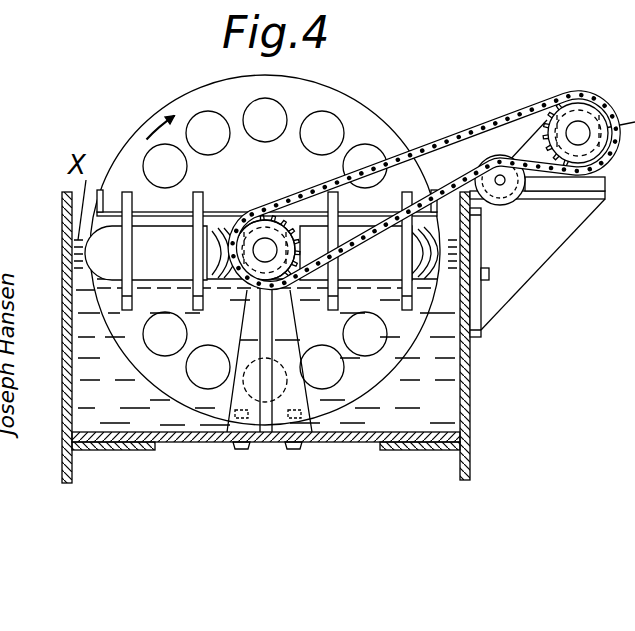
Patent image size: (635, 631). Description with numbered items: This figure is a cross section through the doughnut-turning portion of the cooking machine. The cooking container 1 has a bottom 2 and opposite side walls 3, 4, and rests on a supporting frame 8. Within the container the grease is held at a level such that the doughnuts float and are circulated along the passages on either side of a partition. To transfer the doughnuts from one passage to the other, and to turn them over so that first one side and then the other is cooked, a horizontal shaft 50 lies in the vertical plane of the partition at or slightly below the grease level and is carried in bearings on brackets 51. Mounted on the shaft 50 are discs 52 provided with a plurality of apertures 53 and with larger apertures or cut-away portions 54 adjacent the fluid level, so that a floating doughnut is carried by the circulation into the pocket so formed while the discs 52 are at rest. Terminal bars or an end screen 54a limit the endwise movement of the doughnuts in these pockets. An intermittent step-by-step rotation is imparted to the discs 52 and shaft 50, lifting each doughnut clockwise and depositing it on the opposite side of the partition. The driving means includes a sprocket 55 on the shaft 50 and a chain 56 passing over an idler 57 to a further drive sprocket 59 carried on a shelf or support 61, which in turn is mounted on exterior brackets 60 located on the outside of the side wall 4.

The cooking container 1 is at (267, 341).
The bottom 2 is at (193, 442).
The side wall 3 is at (62, 221).
The side wall 4 is at (481, 336).
The supporting frame 8 is at (72, 472).
The horizontal shaft 50 is at (262, 240).
The brackets 51 is at (250, 318).
The discs 52 is at (193, 91).
The apertures 53 is at (279, 107).
The larger apertures or cut-away portions 54 is at (152, 216).
The terminal bars or end screen 54a is at (198, 296).
The sprocket 55 is at (295, 233).
The chain 56 is at (495, 121).
The idler 57 is at (507, 205).
The motor sprocket 59 is at (581, 129).
The exterior brackets 60 is at (592, 182).
The shelf or support 61 is at (568, 199).